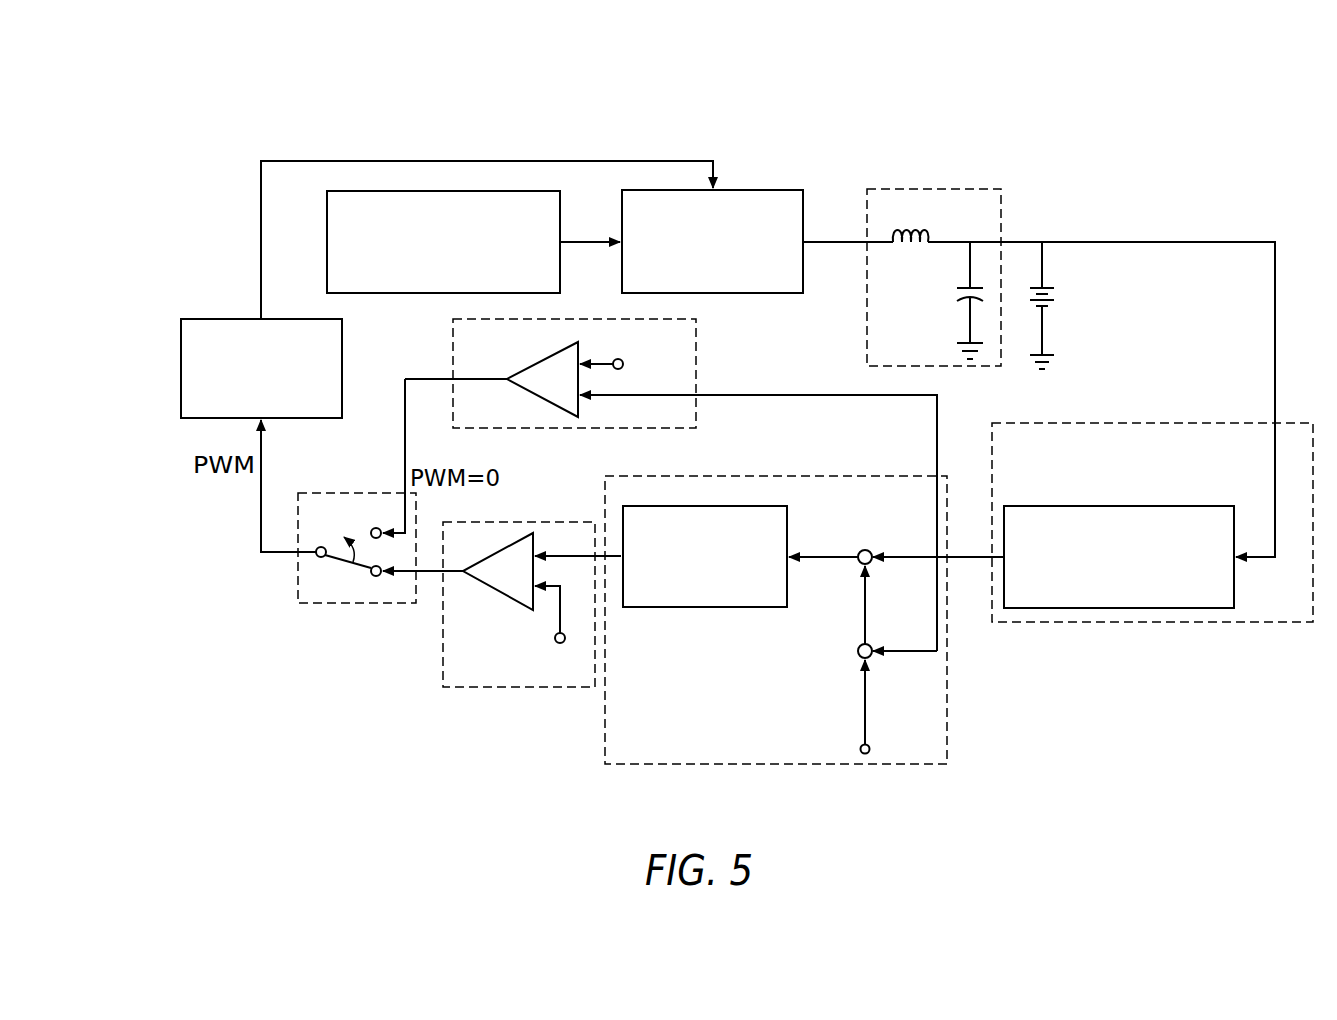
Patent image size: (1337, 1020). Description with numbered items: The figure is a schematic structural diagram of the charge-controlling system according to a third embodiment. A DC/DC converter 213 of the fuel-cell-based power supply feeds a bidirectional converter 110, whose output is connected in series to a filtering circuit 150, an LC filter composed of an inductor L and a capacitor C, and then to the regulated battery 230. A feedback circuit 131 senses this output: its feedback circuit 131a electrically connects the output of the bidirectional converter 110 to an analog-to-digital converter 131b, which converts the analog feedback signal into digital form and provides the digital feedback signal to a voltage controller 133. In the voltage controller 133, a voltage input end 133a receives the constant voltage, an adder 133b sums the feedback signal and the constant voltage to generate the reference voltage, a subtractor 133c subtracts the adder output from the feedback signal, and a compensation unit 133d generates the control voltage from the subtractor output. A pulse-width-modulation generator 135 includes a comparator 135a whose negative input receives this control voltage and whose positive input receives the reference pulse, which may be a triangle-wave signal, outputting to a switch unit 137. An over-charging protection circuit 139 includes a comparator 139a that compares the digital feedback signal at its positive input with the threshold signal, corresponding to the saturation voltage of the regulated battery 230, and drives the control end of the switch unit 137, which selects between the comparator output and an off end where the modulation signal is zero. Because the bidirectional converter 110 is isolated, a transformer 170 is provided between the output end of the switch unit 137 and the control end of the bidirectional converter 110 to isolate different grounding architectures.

The bidirectional converter 110 is at (693, 276).
The DC/DC converter 213 is at (423, 277).
The transformer 170 is at (281, 399).
The filtering circuit 150 is at (934, 243).
The inductor L is at (905, 252).
The capacitor C is at (965, 293).
The regulated battery 230 is at (1056, 302).
The feedback circuit 131 is at (1134, 556).
The feedback circuit 131a is at (1274, 463).
The analog-to-digital converter 131b is at (1148, 599).
The voltage controller 133 is at (776, 653).
The voltage input end 133a is at (860, 749).
The adder 133b is at (857, 651).
The subtractor 133c is at (865, 549).
The compensation unit 133d is at (678, 594).
The PWM generator 135 is at (502, 637).
The comparator 135a is at (492, 590).
The switch unit 137 is at (303, 604).
The over-charging protection circuit 139 is at (534, 373).
The comparator 139a is at (560, 345).